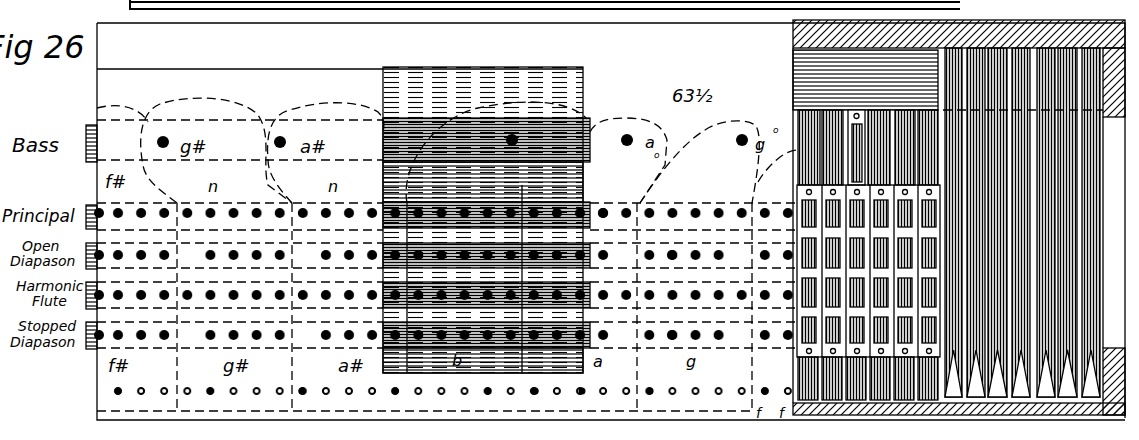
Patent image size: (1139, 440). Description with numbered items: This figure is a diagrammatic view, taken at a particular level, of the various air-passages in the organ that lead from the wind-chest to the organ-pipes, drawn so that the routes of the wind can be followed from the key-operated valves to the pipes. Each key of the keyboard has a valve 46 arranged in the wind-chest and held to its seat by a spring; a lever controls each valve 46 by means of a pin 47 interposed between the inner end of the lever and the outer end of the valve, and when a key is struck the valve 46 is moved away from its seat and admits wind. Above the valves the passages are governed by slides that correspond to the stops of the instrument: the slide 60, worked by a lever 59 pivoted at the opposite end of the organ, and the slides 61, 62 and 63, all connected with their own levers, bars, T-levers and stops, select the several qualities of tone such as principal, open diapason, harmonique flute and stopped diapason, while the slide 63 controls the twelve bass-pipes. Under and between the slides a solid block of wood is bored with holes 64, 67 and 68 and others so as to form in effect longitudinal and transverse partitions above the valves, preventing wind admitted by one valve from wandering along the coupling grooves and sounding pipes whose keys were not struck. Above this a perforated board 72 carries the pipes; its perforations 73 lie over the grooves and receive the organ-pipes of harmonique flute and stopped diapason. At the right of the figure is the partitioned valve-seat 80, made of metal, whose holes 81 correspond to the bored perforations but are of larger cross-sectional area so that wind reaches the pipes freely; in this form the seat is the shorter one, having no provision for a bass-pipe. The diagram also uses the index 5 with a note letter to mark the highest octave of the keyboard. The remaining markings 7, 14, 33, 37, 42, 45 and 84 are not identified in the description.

The note index 5 is at (849, 223).
The pipe 7 is at (818, 147).
The sound-board 14 is at (777, 172).
The pipe 33 is at (1009, 222).
The pipe 37 is at (963, 222).
The pipe 42 is at (1093, 222).
The pipe foot 45 is at (1057, 222).
The valve 46 is at (900, 132).
The pin 47 is at (464, 401).
The lever 59 is at (486, 335).
The slide 60 is at (504, 288).
The slide 61 is at (486, 255).
The slide 62 is at (483, 182).
The slide 63 is at (538, 214).
The hole 64 is at (683, 342).
The hole 67 is at (652, 222).
The hole 68 is at (679, 203).
The perforated board 72 is at (879, 147).
The perforation 73 is at (927, 147).
The partitioned valve-seat 80 is at (851, 271).
The hole 81 is at (849, 271).
The pipe 84 is at (976, 222).